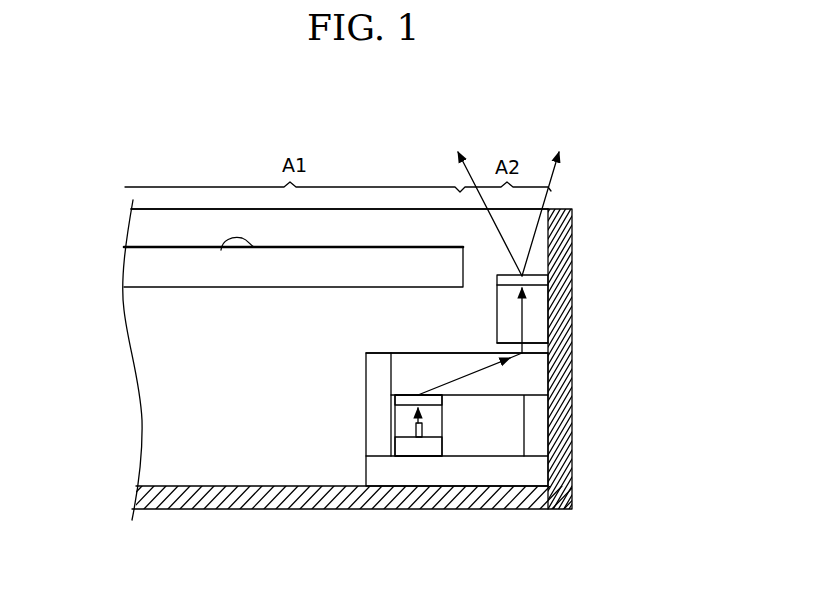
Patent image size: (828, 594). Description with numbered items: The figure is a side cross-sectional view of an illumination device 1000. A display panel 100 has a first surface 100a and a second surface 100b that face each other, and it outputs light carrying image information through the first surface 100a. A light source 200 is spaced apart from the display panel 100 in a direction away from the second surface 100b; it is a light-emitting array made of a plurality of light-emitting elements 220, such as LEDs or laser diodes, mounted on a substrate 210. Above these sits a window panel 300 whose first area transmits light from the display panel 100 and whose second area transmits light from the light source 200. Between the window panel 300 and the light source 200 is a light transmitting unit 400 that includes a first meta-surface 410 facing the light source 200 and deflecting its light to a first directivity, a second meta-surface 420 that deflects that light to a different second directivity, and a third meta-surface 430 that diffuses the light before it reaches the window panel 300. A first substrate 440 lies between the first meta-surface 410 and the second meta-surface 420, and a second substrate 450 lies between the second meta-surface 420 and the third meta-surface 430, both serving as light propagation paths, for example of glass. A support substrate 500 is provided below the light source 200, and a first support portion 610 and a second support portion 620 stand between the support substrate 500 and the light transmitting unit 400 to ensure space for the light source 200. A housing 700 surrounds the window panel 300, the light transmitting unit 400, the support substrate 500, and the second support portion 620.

The illumination device 1000 is at (613, 160).
The window panel 300 is at (131, 230).
The display panel 100 is at (131, 270).
The first surface 100a is at (221, 250).
The second surface 100b is at (272, 287).
The housing 700 is at (565, 232).
The support substrate 500 is at (543, 468).
The light transmitting unit 400 is at (402, 348).
The first substrate 440 is at (433, 360).
The first support portion 610 is at (376, 370).
The second support portion 620 is at (543, 420).
The first meta-surface 410 is at (392, 396).
The light-emitting elements 220 is at (417, 428).
The substrate 210 is at (400, 445).
The light source 200 is at (452, 436).
The second substrate 450 is at (543, 317).
The third meta-surface 430 is at (548, 283).
The second meta-surface 420 is at (545, 352).